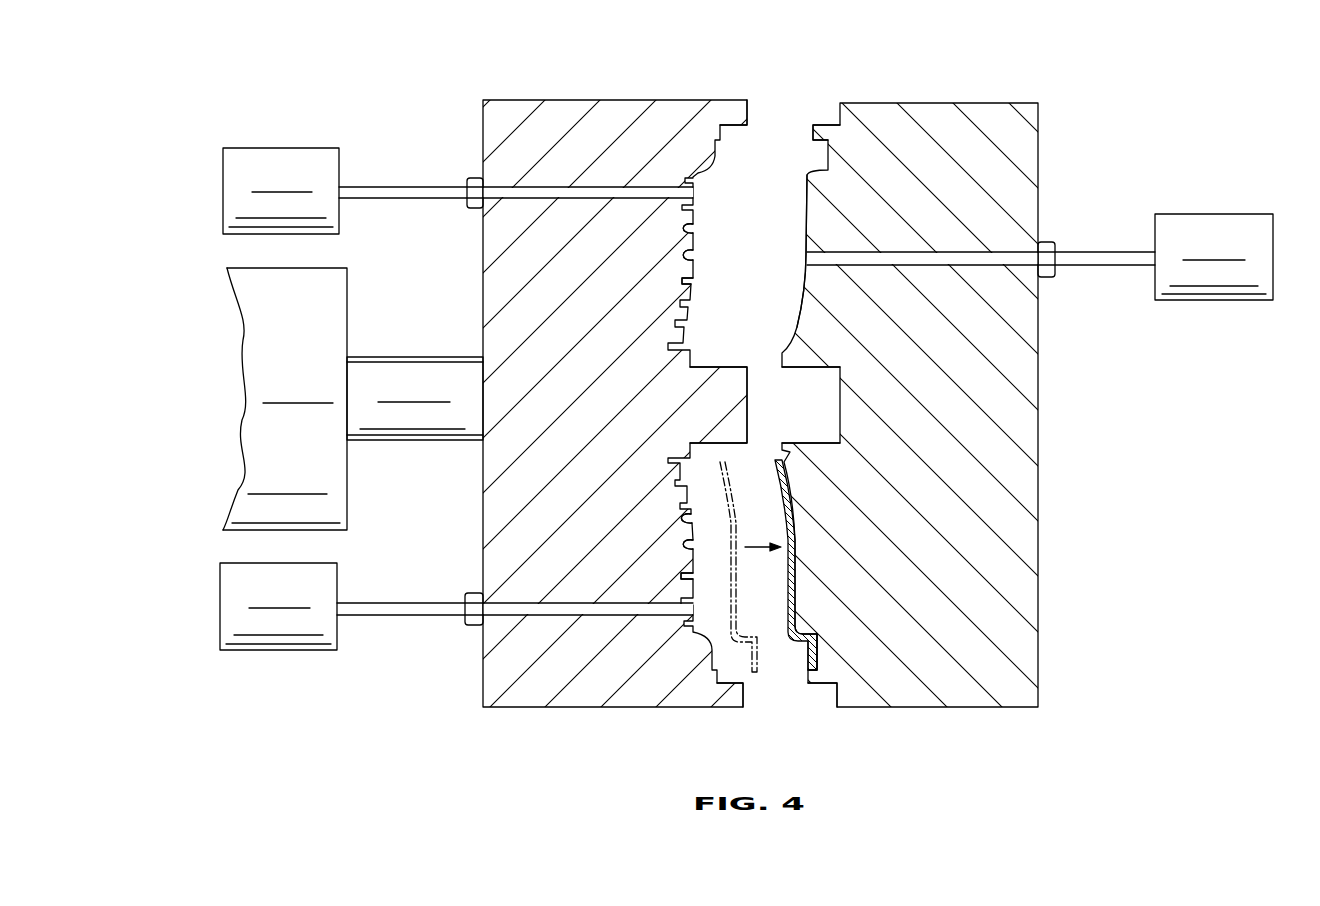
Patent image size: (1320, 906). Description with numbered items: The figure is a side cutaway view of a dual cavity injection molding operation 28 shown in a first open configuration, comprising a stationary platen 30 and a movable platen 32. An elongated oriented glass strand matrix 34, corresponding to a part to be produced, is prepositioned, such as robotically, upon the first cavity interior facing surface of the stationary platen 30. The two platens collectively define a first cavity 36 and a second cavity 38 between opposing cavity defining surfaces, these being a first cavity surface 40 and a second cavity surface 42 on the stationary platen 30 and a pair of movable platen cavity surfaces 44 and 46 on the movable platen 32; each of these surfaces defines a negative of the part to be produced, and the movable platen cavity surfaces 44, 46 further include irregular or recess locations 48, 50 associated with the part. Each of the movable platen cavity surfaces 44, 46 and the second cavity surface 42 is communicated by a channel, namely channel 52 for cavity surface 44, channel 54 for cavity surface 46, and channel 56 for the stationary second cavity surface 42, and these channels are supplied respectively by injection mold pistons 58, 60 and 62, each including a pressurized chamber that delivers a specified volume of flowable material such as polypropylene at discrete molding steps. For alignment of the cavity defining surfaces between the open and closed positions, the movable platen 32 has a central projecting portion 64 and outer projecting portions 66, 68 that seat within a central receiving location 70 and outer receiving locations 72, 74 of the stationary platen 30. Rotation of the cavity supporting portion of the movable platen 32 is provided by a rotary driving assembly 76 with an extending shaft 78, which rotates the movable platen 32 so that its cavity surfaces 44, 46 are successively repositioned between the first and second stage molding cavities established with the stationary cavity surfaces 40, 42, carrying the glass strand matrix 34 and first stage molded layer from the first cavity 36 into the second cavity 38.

The dual cavity injection molding operation 28 is at (1015, 70).
The stationary platen 30 is at (930, 115).
The movable platen 32 is at (570, 115).
The elongated oriented glass strand matrix 34 is at (778, 645).
The first cavity 36 is at (773, 514).
The second cavity 38 is at (768, 253).
The first cavity surface 40 is at (787, 565).
The second cavity surface 42 is at (803, 207).
The movable platen cavity surface 44 is at (693, 543).
The movable platen cavity surface 46 is at (693, 252).
The recess location 48 is at (692, 545).
The recess location 50 is at (690, 252).
The channel 52 is at (527, 620).
The channel 54 is at (525, 187).
The channel 56 is at (980, 250).
The injection mold piston 58 is at (280, 625).
The injection mold piston 60 is at (280, 160).
The injection mold piston 62 is at (1212, 228).
The central projecting portion 64 is at (747, 427).
The outer projecting portion 66 is at (748, 112).
The outer projecting portion 68 is at (745, 702).
The central receiving location 70 is at (838, 393).
The outer receiving location 72 is at (813, 127).
The outer receiving location 74 is at (838, 697).
The rotary driving assembly 76 is at (270, 335).
The shaft 78 is at (414, 365).